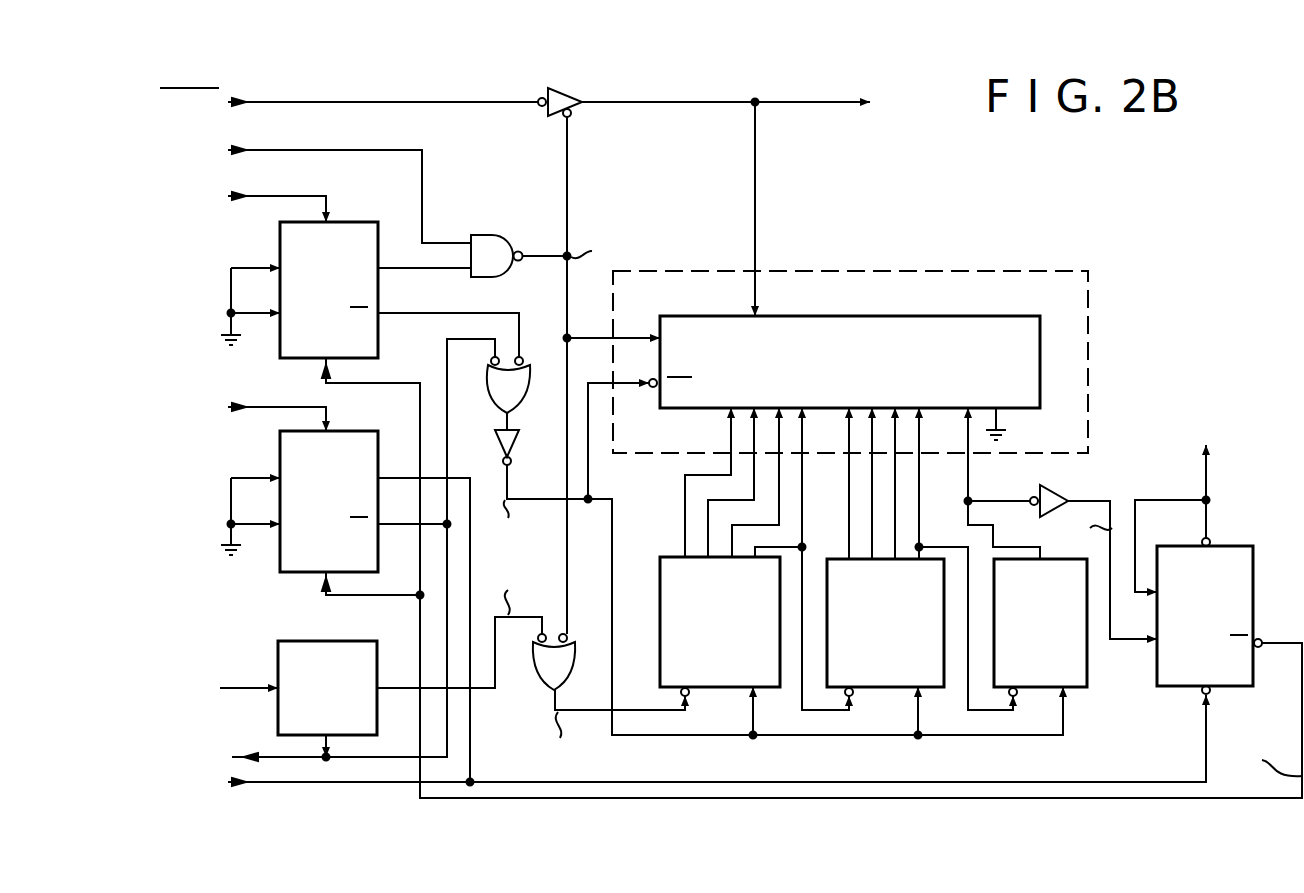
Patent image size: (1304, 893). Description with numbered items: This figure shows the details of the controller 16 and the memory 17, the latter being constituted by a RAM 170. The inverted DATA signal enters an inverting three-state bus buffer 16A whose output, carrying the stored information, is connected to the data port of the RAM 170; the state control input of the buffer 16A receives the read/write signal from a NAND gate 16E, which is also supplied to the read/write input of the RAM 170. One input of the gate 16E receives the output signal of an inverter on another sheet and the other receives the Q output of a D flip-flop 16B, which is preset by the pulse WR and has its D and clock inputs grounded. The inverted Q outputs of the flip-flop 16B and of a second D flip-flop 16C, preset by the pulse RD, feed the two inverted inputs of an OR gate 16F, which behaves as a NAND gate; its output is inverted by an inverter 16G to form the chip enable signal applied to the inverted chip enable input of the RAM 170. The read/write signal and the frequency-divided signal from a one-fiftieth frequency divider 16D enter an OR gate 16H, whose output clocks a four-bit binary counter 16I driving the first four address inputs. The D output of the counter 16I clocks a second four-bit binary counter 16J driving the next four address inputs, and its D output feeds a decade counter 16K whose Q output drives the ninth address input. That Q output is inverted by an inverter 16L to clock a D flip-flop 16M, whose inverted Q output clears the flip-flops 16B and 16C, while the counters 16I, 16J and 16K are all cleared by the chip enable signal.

The controller 16 is at (1157, 219).
The inverting bus buffer 16A is at (568, 92).
The D flip-flop 16B is at (280, 240).
The D flip-flop 16C is at (280, 450).
The 1/50 frequency divider 16D is at (278, 663).
The NAND gate 16E is at (492, 234).
The OR gate 16F is at (482, 376).
The inverter 16G is at (521, 443).
The OR gate 16H is at (540, 655).
The 4-bit binary counter 16I is at (660, 565).
The 4-bit binary counter 16J is at (882, 688).
The decade counter 16K is at (1090, 668).
The inverter 16L is at (1060, 488).
The D flip-flop 16M is at (1238, 548).
The memory 17 is at (972, 268).
The RAM 170 is at (985, 318).